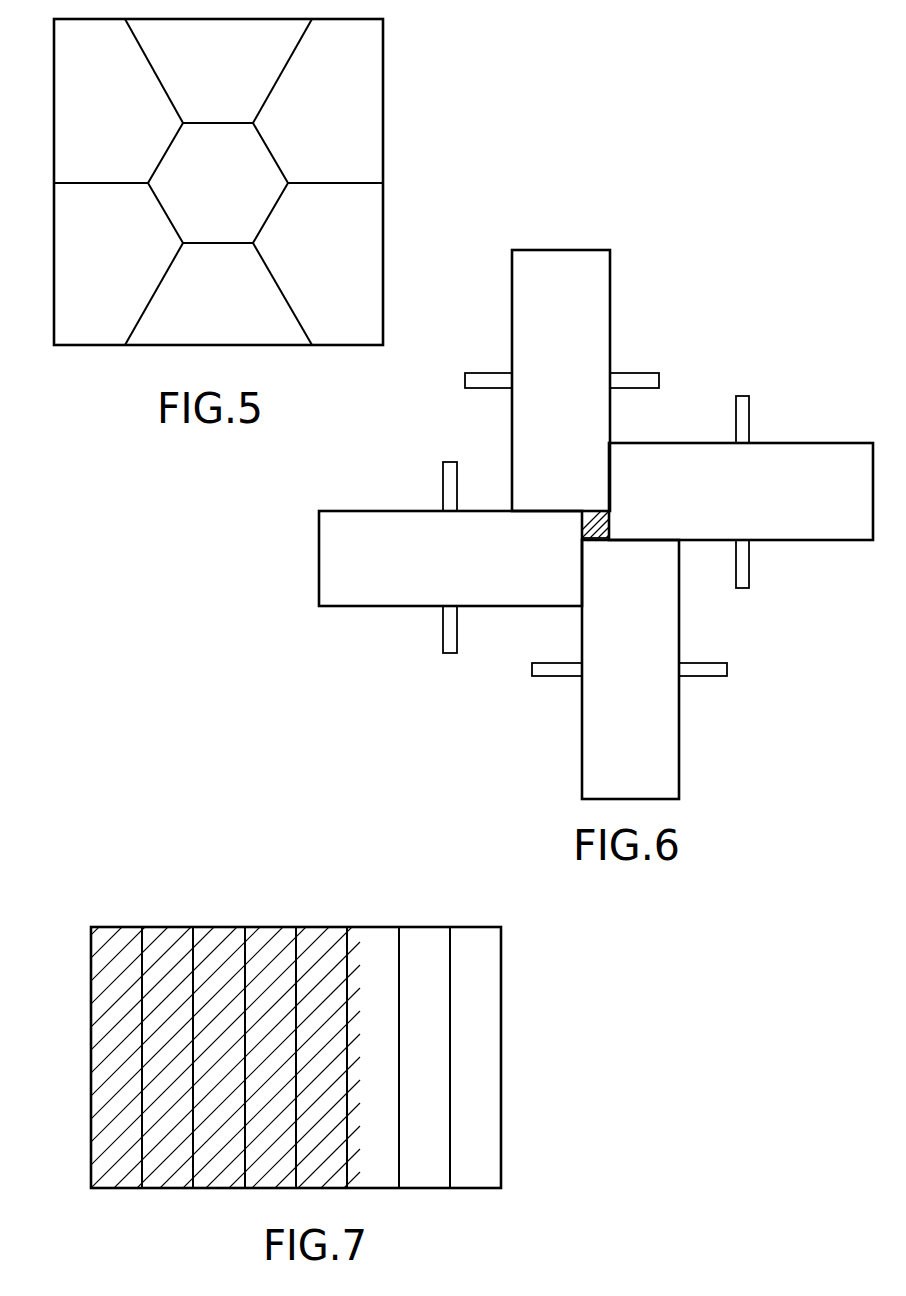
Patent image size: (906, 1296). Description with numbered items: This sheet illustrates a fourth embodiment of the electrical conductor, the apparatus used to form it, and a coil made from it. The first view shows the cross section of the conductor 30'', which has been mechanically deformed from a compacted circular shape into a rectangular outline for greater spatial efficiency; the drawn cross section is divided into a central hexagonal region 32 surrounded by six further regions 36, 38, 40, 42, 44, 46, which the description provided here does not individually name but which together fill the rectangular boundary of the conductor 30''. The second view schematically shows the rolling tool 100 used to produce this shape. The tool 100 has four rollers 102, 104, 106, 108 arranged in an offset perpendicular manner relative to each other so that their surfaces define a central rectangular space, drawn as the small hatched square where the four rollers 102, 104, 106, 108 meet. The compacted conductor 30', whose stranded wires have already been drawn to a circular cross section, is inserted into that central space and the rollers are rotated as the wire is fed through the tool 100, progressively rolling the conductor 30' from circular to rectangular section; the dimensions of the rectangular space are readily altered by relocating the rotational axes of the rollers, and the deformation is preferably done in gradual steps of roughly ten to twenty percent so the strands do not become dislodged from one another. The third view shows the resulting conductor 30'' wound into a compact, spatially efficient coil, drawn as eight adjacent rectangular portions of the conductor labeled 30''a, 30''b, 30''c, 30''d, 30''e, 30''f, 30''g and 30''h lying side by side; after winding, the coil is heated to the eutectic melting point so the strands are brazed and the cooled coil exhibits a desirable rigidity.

In FIG. 5, the conductor 30'' is at (302, 182).
In FIG. 7, the conductor 30'' is at (264, 981).
In FIG. 5, the central hexagonal tile region 32 is at (204, 197).
In FIG. 5, the tile region 36 is at (104, 267).
In FIG. 5, the tile region 38 is at (104, 135).
In FIG. 5, the tile region 40 is at (203, 90).
In FIG. 5, the tile region 42 is at (314, 128).
In FIG. 5, the tile region 44 is at (319, 275).
In FIG. 5, the tile region 46 is at (211, 318).
In FIG. 6, the tool 100 is at (596, 524).
In FIG. 6, the roller 102 is at (422, 570).
In FIG. 6, the roller 104 is at (537, 395).
In FIG. 6, the roller 106 is at (723, 503).
In FIG. 6, the roller 108 is at (613, 675).
In FIG. 6, the conductor 30' is at (608, 546).
In FIG. 7, the strip tile a 30''a is at (118, 1022).
In FIG. 7, the strip tile b 30''b is at (169, 1006).
In FIG. 7, the strip tile c 30''c is at (220, 1022).
In FIG. 7, the strip tile d 30''d is at (271, 1006).
In FIG. 7, the strip tile e 30''e is at (323, 1022).
In FIG. 7, the strip tile f 30''f is at (370, 1006).
In FIG. 7, the strip tile g 30''g is at (428, 1022).
In FIG. 7, the strip tile h 30''h is at (474, 1006).